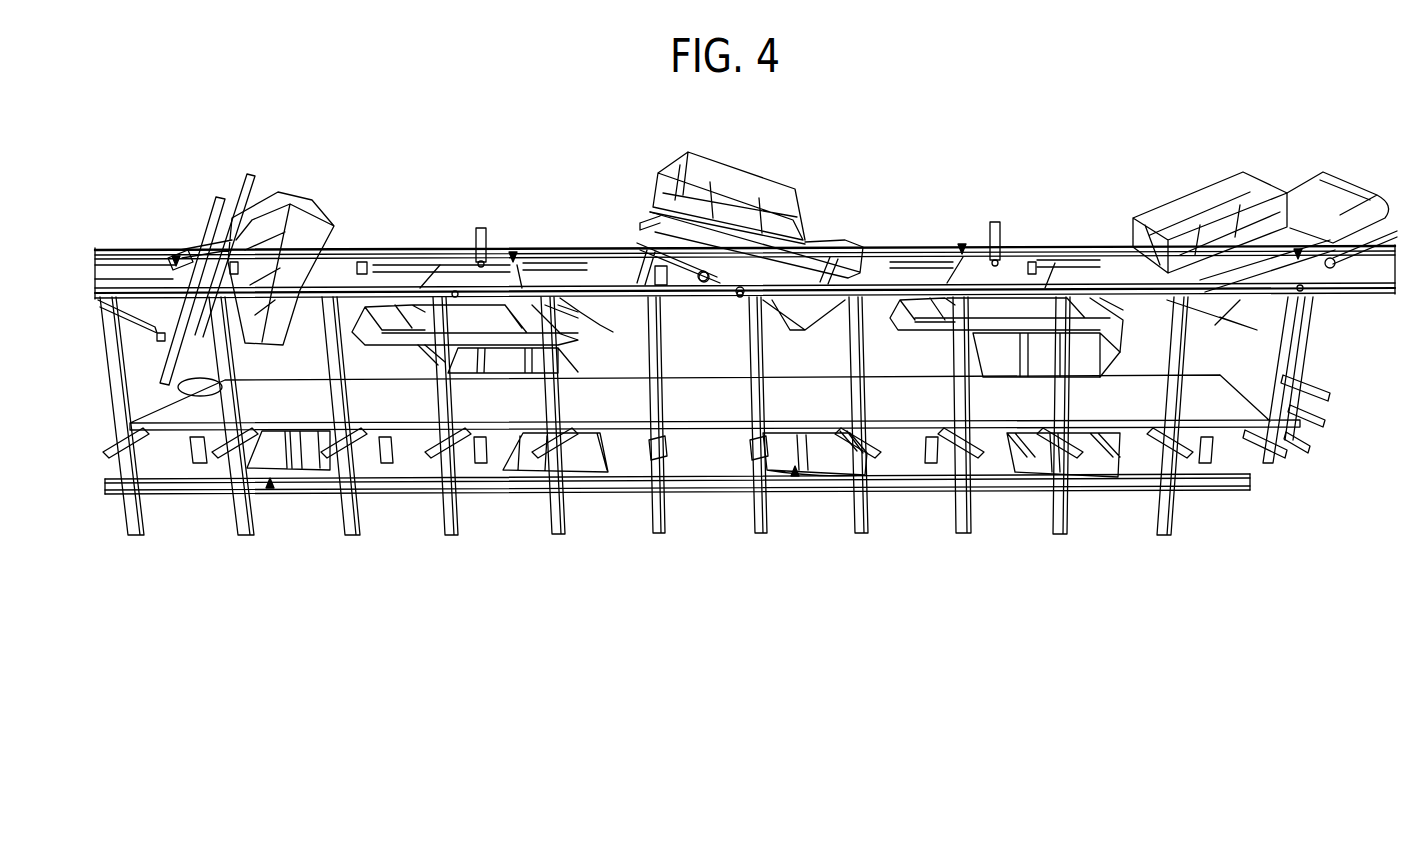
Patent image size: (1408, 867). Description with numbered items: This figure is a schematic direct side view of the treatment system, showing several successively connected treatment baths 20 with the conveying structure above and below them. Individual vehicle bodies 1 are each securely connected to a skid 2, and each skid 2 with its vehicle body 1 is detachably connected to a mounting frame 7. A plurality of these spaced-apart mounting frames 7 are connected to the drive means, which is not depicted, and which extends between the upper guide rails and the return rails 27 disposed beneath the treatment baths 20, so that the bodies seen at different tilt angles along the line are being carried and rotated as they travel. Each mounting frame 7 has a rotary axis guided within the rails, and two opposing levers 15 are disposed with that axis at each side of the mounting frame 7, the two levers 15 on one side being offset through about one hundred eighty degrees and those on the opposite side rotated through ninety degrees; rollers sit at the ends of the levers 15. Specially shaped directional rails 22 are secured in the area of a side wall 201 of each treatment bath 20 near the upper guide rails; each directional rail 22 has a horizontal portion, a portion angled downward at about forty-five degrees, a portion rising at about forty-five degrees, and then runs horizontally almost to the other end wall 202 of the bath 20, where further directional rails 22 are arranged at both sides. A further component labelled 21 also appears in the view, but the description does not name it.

The vehicle body 1 is at (299, 200).
The skid 2 is at (213, 208).
The mounting frame 7 is at (176, 262).
The lever 15 is at (472, 240).
The treatment bath 20 is at (310, 405).
The conveyor line 21 is at (445, 403).
The directional rail 22 is at (128, 338).
The return rail 27 is at (702, 422).
The side wall of the treatment bath 201 is at (128, 385).
The end wall of the treatment bath 202 is at (1260, 380).